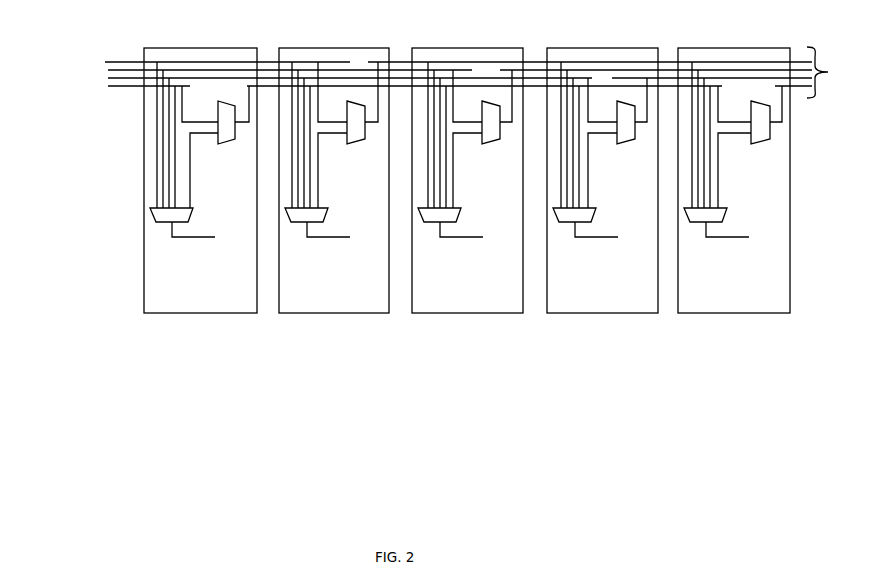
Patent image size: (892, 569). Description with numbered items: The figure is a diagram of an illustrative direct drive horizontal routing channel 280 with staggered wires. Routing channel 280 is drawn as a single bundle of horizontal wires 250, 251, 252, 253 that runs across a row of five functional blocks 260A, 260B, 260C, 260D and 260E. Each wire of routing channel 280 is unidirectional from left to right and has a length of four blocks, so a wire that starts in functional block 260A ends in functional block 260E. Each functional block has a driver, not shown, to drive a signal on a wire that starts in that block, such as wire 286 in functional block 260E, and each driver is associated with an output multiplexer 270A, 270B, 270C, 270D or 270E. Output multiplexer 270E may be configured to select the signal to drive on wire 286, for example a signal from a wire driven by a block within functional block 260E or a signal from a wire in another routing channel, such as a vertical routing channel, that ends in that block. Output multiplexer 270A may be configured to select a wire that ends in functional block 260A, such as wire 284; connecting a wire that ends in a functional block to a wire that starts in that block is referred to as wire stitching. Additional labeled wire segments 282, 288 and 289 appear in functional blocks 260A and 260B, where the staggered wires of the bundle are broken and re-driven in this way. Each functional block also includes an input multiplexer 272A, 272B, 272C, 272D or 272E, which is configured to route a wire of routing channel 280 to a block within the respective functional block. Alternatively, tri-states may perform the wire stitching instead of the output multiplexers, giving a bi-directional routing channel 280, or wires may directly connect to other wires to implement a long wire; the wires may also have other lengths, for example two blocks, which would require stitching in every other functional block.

The bus line 250 is at (98, 60).
The bus line 251 is at (61, 68).
The bus line 252 is at (99, 76).
The bus line 253 is at (61, 85).
The direct drive horizontal routing channel 280 is at (834, 72).
The functional block 260A is at (199, 48).
The functional block 260B is at (334, 48).
The functional block 260C is at (467, 48).
The functional block 260D is at (602, 48).
The functional block 260E is at (733, 48).
The output multiplexer 270A is at (227, 144).
The output multiplexer 270B is at (358, 144).
The output multiplexer 270C is at (492, 144).
The output multiplexer 270D is at (627, 144).
The output multiplexer 270E is at (760, 142).
The input multiplexer 272A is at (193, 211).
The input multiplexer 272B is at (328, 211).
The input multiplexer 272C is at (461, 211).
The input multiplexer 272D is at (596, 211).
The input multiplexer 272E is at (727, 211).
The bus segment input path 282 is at (327, 88).
The wire 284 is at (185, 90).
The wire 286 is at (773, 87).
The multiplexer output path 288 is at (191, 166).
The right bus segment input path 289 is at (203, 81).